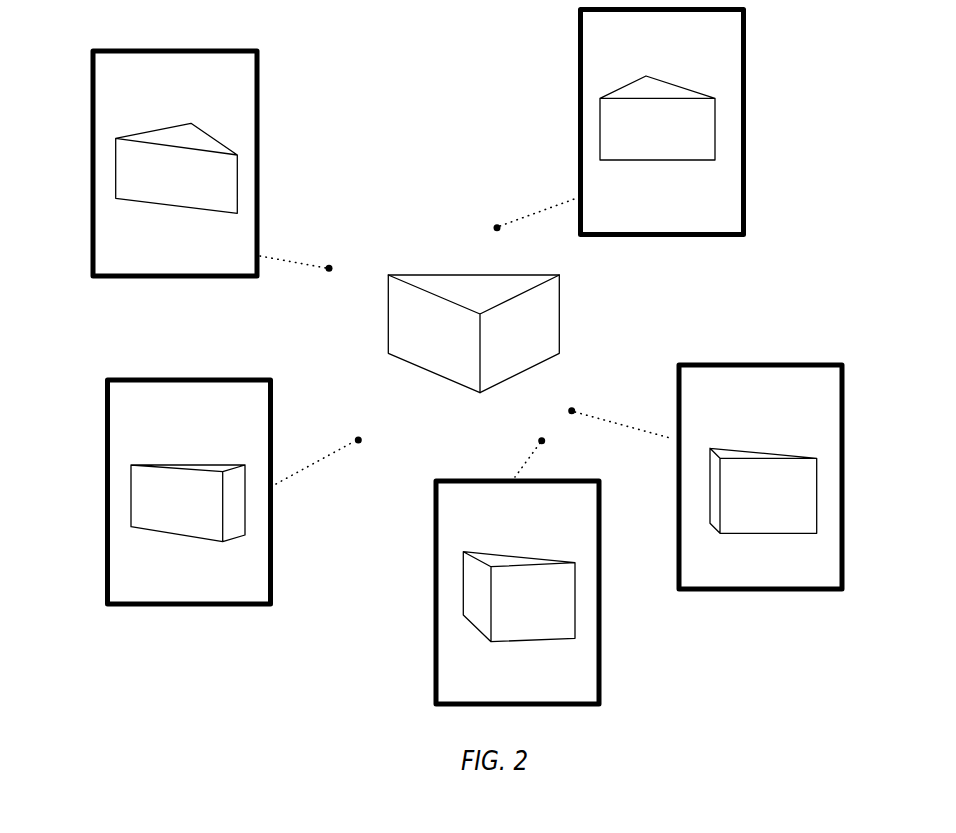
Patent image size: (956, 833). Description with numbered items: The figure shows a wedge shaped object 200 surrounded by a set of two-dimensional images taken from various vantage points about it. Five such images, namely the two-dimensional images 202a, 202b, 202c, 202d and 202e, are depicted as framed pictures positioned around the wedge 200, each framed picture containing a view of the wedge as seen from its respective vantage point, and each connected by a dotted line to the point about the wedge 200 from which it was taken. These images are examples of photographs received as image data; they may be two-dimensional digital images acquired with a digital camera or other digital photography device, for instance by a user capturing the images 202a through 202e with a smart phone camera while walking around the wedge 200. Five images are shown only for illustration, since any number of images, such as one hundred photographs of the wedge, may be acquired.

The wedge shaped object 200 is at (461, 266).
The 2D image 202a is at (851, 470).
The 2D image 202b is at (608, 675).
The 2D image 202c is at (103, 499).
The 2D image 202d is at (88, 125).
The 2D image 202e is at (753, 115).